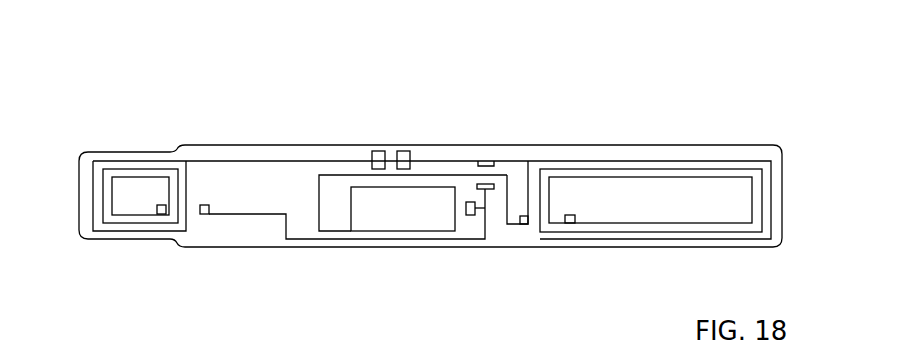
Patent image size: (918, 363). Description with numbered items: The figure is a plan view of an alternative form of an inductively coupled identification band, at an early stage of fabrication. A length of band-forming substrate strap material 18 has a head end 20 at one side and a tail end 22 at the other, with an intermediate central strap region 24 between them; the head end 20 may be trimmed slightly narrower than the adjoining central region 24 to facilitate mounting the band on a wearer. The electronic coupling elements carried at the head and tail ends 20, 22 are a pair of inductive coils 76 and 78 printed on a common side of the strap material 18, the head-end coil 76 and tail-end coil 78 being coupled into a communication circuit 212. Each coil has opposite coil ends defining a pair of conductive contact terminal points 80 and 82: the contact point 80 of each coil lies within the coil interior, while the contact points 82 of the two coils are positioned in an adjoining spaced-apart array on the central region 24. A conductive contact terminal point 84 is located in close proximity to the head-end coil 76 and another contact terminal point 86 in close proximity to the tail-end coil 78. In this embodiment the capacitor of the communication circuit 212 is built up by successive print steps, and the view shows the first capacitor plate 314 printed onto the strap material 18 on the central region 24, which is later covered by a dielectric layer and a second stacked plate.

The substrate strap 18 is at (243, 152).
The head end 20 is at (103, 157).
The tail end 22 is at (783, 150).
The central strap region 24 is at (452, 148).
The head-end inductive coil 76 is at (125, 222).
The tail-end inductive coil 78 is at (765, 187).
The contact terminal point 80 is at (161, 205).
The contact terminal points 82 is at (403, 151).
The contact terminal point 84 is at (208, 206).
The contact terminal point 86 is at (522, 216).
The communication circuit 212 is at (588, 116).
The first capacitor plate 314 is at (415, 208).